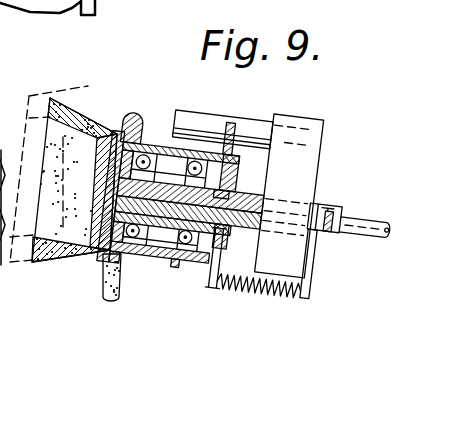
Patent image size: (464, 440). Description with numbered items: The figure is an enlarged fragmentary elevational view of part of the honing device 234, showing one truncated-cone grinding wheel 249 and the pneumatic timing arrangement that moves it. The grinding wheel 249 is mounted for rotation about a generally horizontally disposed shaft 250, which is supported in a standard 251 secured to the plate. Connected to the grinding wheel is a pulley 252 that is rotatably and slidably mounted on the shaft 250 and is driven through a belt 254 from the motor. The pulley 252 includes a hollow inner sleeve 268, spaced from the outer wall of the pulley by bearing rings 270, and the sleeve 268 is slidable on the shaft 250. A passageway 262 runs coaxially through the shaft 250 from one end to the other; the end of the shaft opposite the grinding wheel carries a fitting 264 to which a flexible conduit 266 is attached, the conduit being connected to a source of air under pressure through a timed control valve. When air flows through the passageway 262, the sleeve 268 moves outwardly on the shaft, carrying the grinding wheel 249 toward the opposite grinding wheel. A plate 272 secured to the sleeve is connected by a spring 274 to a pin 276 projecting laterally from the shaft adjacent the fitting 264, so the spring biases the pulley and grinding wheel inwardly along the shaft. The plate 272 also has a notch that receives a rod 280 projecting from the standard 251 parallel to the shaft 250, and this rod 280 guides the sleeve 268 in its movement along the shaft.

The honing device 234 is at (228, 210).
The grinding wheel 249 is at (97, 84).
The shaft 250 is at (331, 206).
The standard 251 is at (318, 169).
The pulley 252 is at (157, 147).
The belt 254 is at (103, 289).
The passageway 262 is at (163, 257).
The fitting 264 is at (339, 233).
The flexible conduit 266 is at (373, 237).
The hollow inner sleeve 268 is at (175, 152).
The bearing rings 270 is at (134, 257).
The plate 272 is at (210, 287).
The spring 274 is at (283, 298).
The pin 276 is at (312, 293).
The rod 280 is at (257, 119).